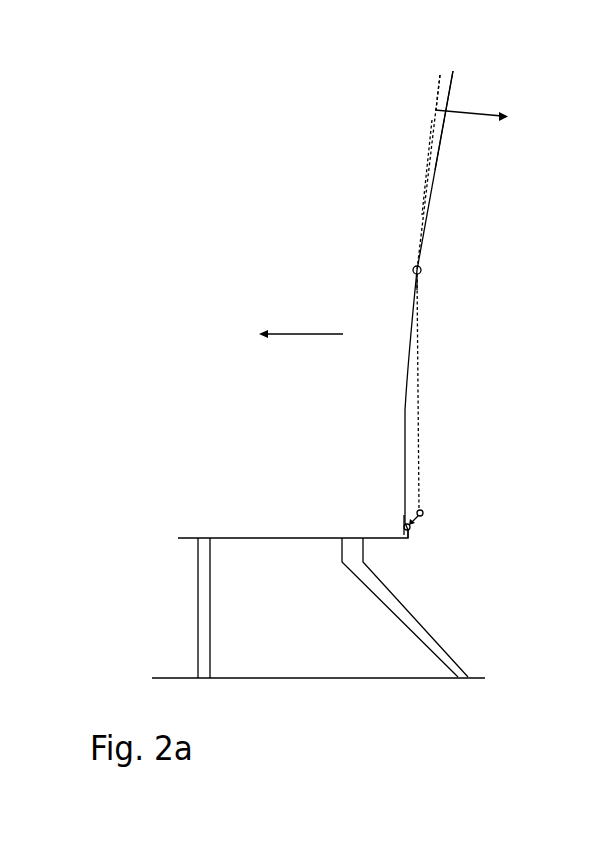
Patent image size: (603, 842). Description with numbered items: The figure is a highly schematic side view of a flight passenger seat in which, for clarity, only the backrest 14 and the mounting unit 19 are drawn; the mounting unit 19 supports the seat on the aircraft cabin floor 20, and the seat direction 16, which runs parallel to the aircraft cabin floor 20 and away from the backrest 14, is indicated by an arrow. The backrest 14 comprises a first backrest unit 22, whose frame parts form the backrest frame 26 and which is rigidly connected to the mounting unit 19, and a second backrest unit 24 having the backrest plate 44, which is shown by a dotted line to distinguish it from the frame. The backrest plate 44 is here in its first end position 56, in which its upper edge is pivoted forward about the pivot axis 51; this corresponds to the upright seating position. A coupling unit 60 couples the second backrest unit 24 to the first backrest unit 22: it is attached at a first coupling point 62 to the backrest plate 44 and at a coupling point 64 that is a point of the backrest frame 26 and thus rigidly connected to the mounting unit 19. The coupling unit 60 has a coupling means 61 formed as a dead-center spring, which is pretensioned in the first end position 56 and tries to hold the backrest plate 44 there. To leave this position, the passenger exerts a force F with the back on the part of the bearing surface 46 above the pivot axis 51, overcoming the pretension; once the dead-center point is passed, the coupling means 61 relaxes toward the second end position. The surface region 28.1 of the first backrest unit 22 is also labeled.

The backrest 14 is at (342, 286).
The seat direction 16 is at (307, 333).
The mounting unit 19 is at (202, 579).
The aircraft cabin floor 20 is at (263, 677).
The first backrest unit 22 is at (434, 195).
The second backrest unit 24 is at (425, 467).
The backrest frame 26 is at (405, 408).
The backrest surface 28.1 is at (438, 153).
The backrest plate 44 is at (428, 132).
The bearing surface 46 is at (433, 84).
The pivot axis 51 is at (421, 270).
The first end position 56 is at (398, 168).
The coupling unit 60 is at (397, 501).
The coupling means 61 is at (412, 523).
The first coupling point 62 is at (424, 514).
The coupling point 64 is at (410, 530).
The force F is at (468, 113).